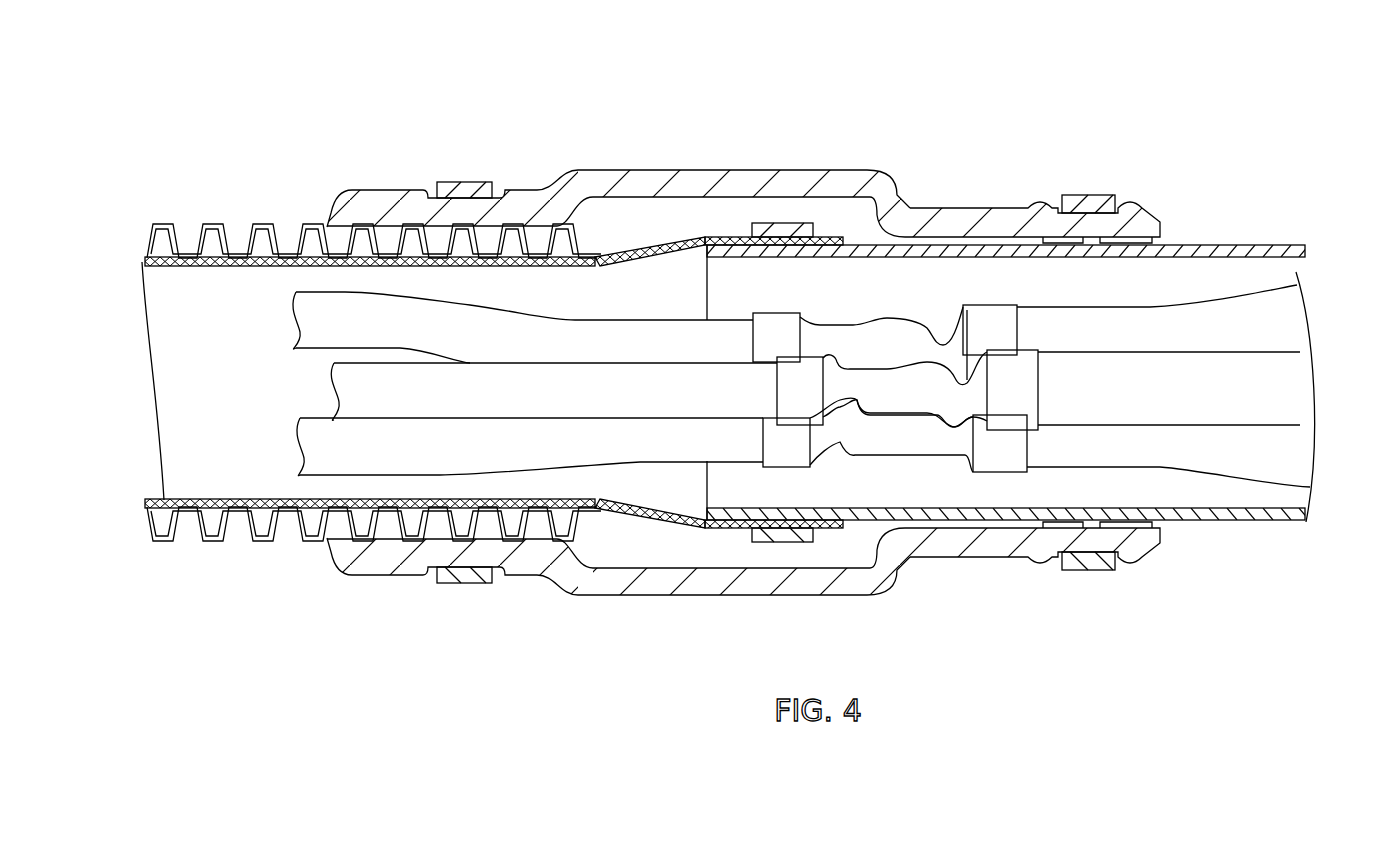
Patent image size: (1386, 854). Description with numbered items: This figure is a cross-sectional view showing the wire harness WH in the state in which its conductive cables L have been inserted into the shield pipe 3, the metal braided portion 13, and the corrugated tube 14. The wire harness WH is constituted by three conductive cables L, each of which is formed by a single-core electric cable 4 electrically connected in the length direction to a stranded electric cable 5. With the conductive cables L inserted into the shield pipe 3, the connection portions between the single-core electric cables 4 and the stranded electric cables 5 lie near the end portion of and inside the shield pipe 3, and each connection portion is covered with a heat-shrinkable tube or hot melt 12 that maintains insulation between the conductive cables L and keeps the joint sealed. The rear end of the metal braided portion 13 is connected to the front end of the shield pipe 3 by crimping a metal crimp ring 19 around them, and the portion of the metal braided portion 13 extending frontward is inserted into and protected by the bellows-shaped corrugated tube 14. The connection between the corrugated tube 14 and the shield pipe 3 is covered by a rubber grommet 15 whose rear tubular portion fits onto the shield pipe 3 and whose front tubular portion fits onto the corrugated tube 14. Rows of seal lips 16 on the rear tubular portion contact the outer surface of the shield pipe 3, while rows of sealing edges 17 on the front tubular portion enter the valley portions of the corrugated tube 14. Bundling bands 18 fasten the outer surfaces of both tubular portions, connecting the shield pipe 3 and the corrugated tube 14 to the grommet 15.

The shield pipe 3 is at (1238, 250).
The single-core electric cable 4 is at (1177, 458).
The stranded electric cable 5 is at (425, 455).
The heat-shrinkable tube or hot melt 12 is at (917, 440).
The metal braided portion 13 is at (622, 257).
The corrugated tube 14 is at (210, 225).
The grommet 15 is at (690, 170).
The seal lips 16 is at (1160, 238).
The sealing edges 17 is at (490, 238).
The bundling bands 18 is at (462, 185).
The metal crimp ring 19 is at (781, 225).
The wire harness WH is at (1034, 278).
The conductive cable L is at (1297, 447).